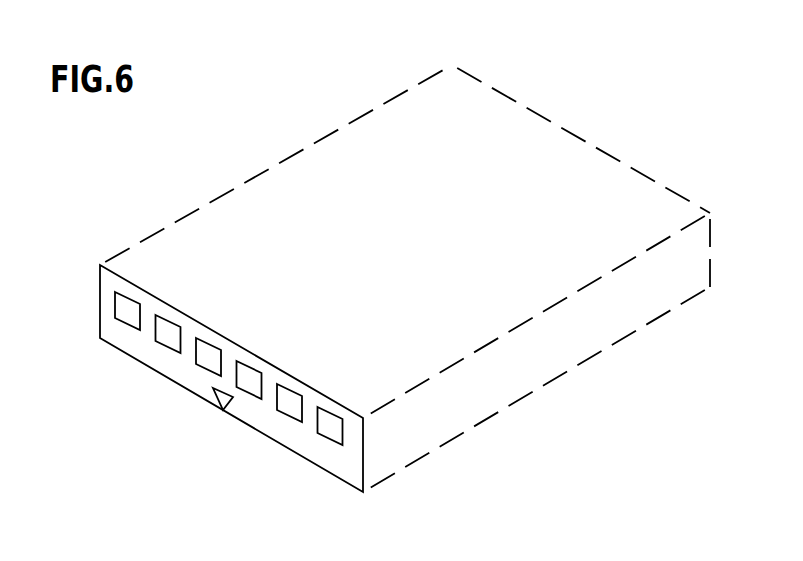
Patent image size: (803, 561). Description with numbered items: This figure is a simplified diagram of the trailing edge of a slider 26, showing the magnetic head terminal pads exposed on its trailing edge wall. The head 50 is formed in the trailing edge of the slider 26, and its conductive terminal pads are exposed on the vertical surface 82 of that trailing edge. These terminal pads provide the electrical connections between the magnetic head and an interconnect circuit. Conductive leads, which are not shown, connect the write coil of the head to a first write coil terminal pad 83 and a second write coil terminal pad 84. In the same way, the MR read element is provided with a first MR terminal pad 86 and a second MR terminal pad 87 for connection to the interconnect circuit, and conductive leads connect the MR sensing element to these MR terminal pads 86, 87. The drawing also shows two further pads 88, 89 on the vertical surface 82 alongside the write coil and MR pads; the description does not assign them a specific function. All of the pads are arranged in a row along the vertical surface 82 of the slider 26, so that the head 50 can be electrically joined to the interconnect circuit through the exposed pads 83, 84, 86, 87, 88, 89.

The slider 26 is at (513, 406).
The vertical surface 82 is at (342, 468).
The first write coil terminal pad 83 is at (123, 310).
The second write coil terminal pad 84 is at (327, 425).
The first MR terminal pad 86 is at (163, 332).
The second MR terminal pad 87 is at (287, 403).
The opening 88 is at (207, 357).
The opening 89 is at (248, 383).
The head 50 is at (225, 400).